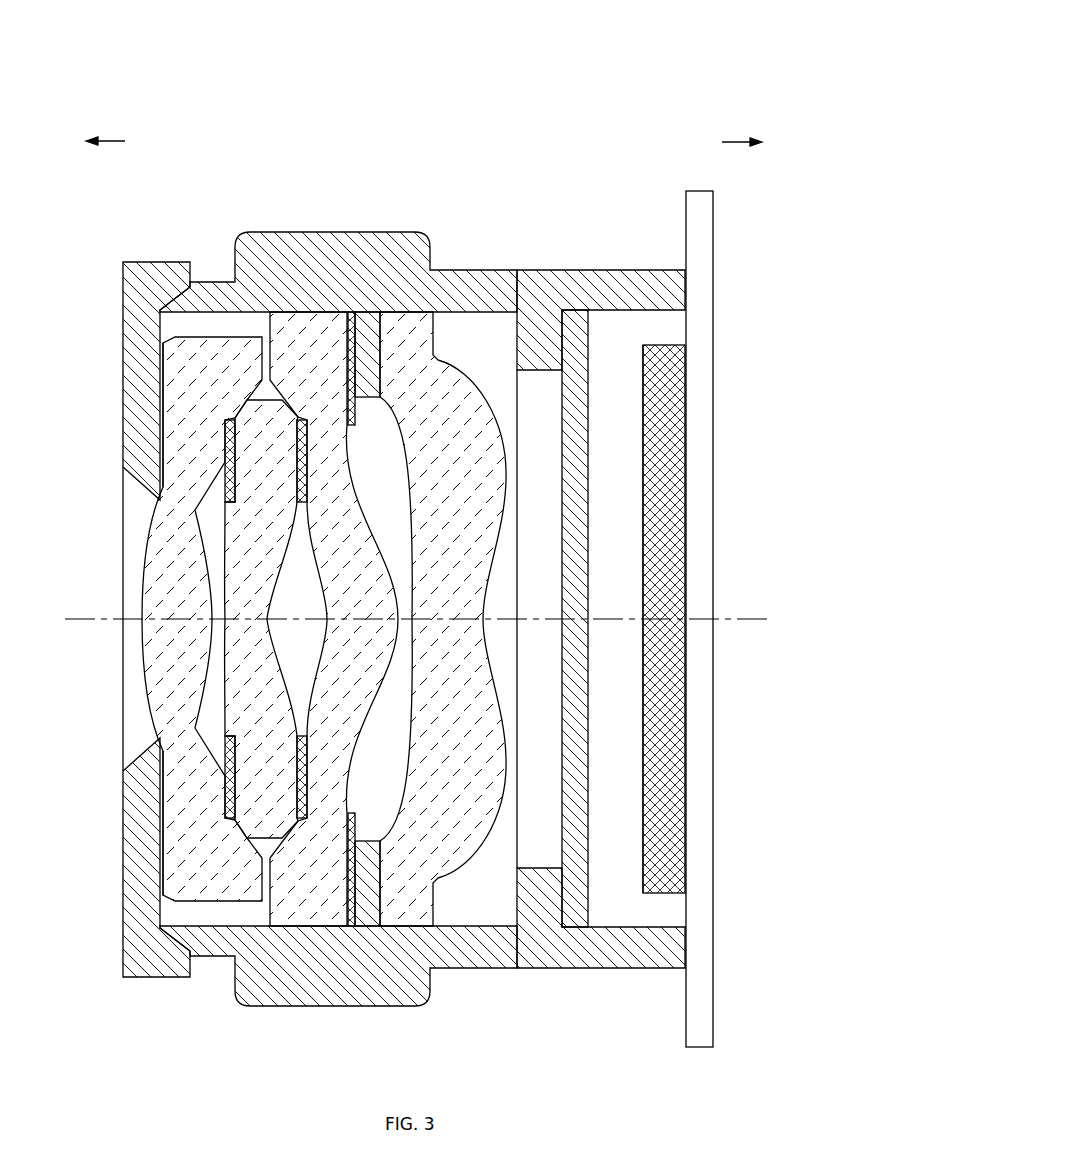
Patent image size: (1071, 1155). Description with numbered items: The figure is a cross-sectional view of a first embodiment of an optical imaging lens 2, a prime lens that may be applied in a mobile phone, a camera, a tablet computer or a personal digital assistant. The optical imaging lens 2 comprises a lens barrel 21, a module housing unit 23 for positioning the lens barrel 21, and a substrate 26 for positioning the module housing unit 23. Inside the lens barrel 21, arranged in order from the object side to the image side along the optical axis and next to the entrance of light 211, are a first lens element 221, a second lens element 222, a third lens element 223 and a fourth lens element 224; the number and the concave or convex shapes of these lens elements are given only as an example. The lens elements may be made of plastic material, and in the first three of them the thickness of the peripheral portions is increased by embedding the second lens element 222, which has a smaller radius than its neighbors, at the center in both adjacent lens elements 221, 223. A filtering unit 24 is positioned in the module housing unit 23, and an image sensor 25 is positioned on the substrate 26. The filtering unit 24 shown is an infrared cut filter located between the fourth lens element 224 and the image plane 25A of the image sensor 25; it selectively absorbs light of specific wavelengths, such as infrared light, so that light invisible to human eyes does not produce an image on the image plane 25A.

The optical imaging lens 2 is at (714, 78).
The lens barrel 21 is at (335, 250).
The entrance of light 211 is at (136, 513).
The first lens element 221 is at (176, 672).
The second lens element 222 is at (267, 823).
The third lens element 223 is at (307, 912).
The fourth lens element 224 is at (407, 912).
The module housing unit 23 is at (607, 285).
The filtering unit 24 is at (598, 765).
The image sensor 25 is at (678, 772).
The image plane 25A is at (640, 455).
The substrate 26 is at (708, 835).